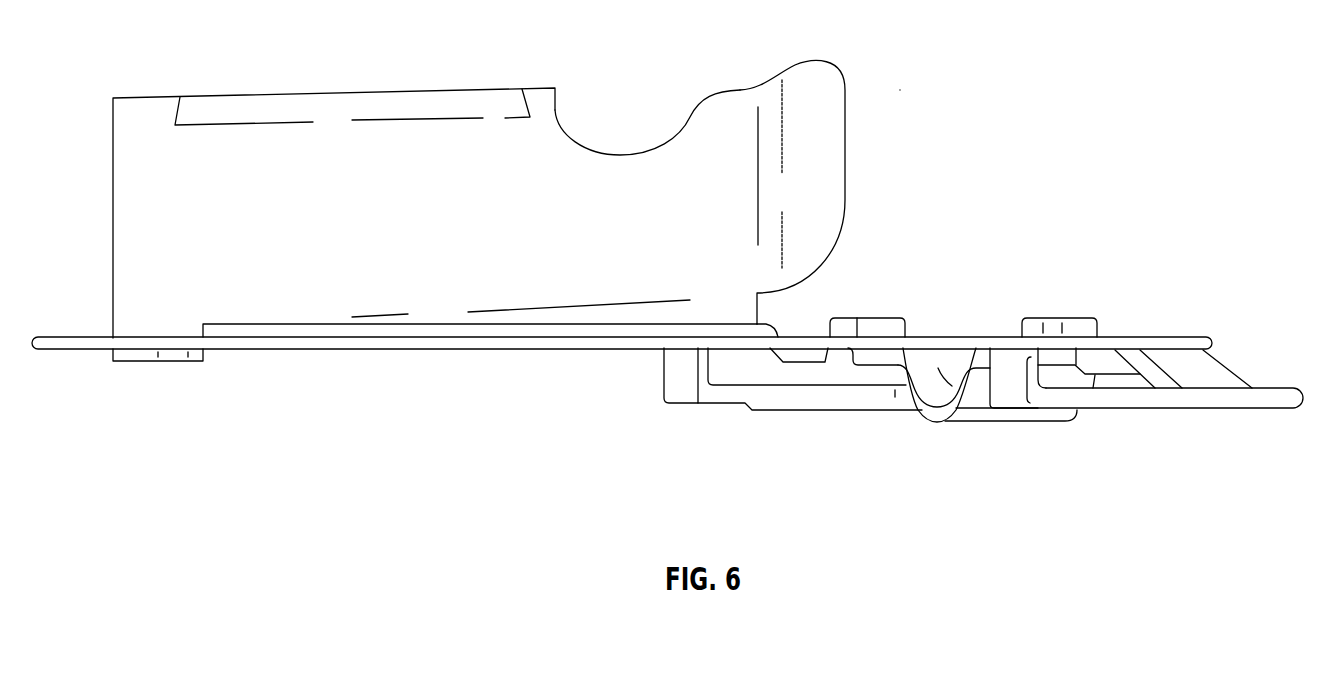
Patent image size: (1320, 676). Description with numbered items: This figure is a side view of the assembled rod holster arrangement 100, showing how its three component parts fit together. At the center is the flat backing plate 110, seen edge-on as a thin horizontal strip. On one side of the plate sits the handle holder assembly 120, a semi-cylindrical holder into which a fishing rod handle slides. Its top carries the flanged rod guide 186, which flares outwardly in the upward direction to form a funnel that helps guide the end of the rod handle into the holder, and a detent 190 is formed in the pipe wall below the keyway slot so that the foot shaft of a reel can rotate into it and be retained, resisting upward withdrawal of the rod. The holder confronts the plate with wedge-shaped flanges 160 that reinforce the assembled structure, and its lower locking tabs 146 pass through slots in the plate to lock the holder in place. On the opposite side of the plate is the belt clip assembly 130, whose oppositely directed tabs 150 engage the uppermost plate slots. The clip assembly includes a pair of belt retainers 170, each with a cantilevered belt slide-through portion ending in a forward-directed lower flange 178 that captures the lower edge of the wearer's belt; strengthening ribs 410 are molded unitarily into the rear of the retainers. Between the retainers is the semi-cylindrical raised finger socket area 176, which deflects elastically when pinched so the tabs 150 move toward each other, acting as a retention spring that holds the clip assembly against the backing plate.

The rod holster arrangement 100 is at (875, 62).
The backing plate 110 is at (1132, 337).
The handle holder assembly 120 is at (491, 131).
The belt clip assembly 130 is at (1177, 410).
The lower locking tabs 146 is at (170, 359).
The tabs 150 is at (869, 325).
The wedge-shaped flanges 160 is at (653, 332).
The belt retainers 170 is at (733, 398).
The semi-cylindrical raised finger socket area 176 is at (937, 422).
The lower flange 178 is at (680, 387).
The flanged rod guide 186 is at (823, 153).
The detents 190 is at (626, 154).
The strengthening ribs 410 is at (818, 412).